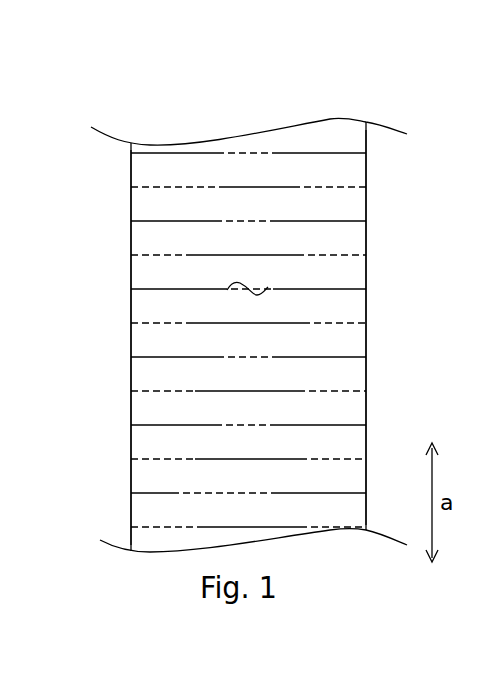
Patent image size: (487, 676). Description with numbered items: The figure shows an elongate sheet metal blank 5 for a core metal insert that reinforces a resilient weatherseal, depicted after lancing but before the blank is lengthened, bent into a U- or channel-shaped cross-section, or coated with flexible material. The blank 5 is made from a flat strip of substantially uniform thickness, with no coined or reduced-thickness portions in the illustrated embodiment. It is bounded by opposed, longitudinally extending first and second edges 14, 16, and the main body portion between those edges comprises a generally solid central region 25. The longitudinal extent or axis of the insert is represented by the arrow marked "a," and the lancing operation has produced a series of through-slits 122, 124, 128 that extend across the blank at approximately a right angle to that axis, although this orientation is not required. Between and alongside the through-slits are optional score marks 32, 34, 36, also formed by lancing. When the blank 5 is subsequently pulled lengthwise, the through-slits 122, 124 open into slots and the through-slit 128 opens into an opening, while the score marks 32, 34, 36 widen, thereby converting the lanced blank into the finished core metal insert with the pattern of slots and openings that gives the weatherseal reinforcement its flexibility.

The sheet metal blank 5 is at (120, 107).
The first edge 14 is at (133, 377).
The second edge 16 is at (366, 343).
The central region 25 is at (238, 286).
The score mark 32 is at (153, 527).
The score mark 34 is at (257, 146).
The score mark 36 is at (238, 218).
The through-slit 122 is at (170, 427).
The through-slit 124 is at (335, 493).
The through-slit 128 is at (269, 459).